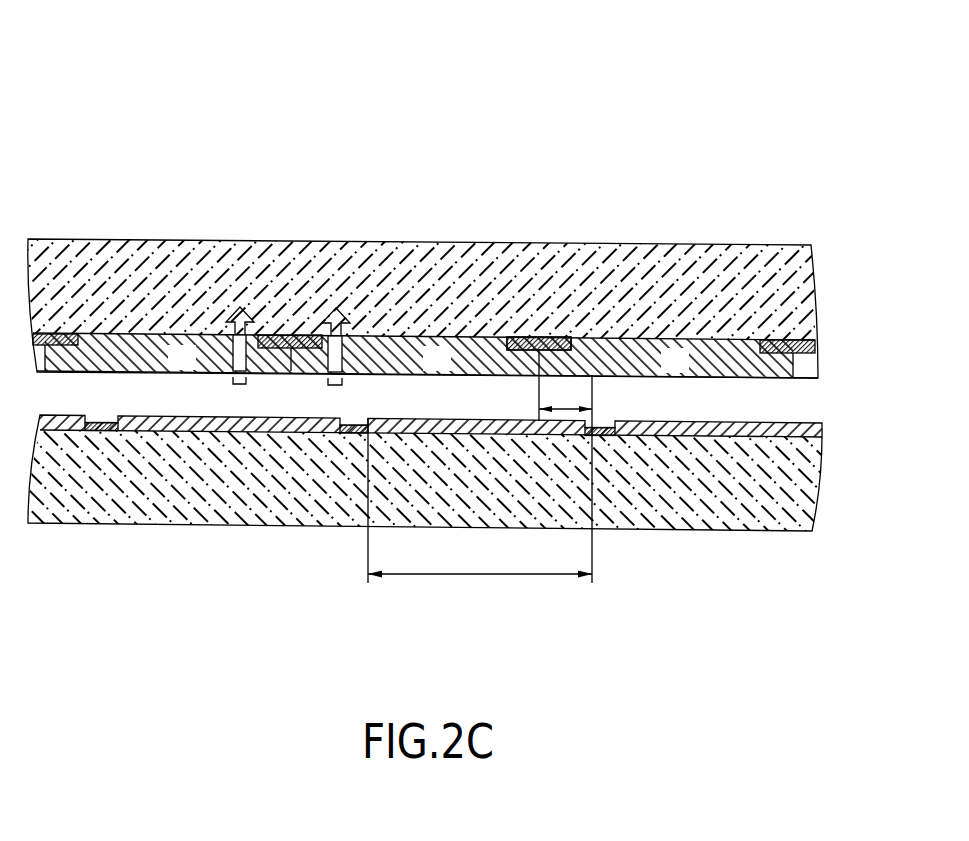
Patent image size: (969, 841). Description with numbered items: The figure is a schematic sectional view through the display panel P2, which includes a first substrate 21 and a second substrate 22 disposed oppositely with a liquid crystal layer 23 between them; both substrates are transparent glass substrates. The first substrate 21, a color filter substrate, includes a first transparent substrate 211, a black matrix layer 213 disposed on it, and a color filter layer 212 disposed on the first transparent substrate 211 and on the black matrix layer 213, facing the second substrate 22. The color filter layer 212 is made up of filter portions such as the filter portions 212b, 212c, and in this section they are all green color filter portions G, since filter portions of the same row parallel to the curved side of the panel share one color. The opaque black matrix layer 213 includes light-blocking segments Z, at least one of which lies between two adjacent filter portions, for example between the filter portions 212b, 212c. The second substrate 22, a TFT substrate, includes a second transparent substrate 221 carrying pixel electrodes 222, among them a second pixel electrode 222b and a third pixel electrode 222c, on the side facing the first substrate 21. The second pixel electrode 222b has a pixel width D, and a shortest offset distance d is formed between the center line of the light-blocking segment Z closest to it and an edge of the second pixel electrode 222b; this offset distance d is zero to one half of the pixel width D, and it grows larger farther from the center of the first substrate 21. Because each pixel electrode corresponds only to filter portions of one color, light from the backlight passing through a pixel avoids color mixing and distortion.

The display panel P2 is at (157, 62).
The first substrate 21 is at (72, 264).
The first transparent substrate 211 is at (763, 262).
The color filter layer 212 is at (138, 353).
The filter portion 212b is at (475, 350).
The filter portion 212c is at (627, 347).
The black matrix layer 213 is at (257, 335).
The light-blocking segment Z is at (531, 348).
The green color filter portion G is at (428, 359).
The liquid crystal layer 23 is at (778, 401).
The second substrate 22 is at (46, 461).
The second transparent substrate 221 is at (772, 518).
The pixel electrodes 222 is at (210, 427).
The second pixel electrode 222b is at (472, 420).
The third pixel electrode 222c is at (673, 440).
The pixel width D is at (480, 479).
The offset distance d is at (565, 397).